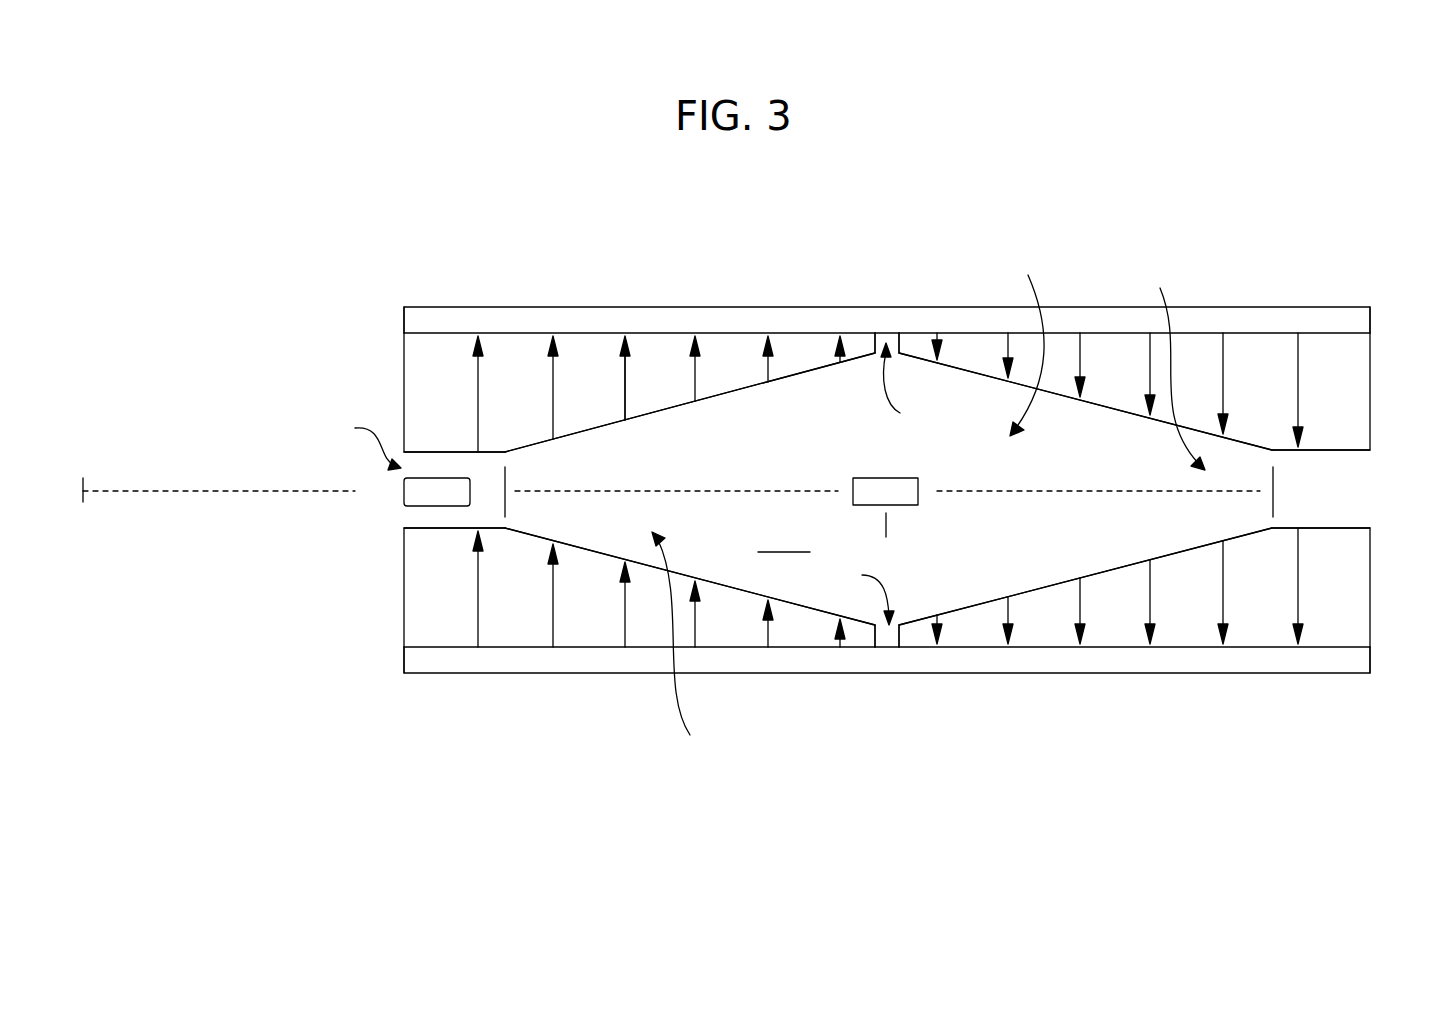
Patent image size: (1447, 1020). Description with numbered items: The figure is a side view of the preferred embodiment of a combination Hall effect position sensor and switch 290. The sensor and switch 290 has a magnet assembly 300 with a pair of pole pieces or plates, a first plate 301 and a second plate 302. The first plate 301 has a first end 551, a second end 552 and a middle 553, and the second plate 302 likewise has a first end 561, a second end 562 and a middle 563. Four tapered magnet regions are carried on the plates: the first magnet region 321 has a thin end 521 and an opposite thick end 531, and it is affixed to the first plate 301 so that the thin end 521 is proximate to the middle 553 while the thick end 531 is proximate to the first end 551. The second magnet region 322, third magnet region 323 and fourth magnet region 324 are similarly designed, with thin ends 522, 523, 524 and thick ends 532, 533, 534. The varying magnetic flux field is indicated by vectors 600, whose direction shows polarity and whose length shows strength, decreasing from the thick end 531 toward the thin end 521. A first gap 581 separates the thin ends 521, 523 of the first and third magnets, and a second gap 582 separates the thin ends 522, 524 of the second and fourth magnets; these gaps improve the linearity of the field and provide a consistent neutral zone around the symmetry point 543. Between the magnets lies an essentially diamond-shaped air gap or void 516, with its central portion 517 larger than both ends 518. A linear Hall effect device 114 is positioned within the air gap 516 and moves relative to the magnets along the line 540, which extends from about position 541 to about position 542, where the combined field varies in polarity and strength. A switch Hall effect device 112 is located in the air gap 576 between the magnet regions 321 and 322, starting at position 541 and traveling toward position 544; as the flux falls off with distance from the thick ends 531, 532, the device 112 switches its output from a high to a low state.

The combination Hall effect position sensor and switch 290 is at (385, 212).
The magnet assembly 300 is at (376, 321).
The first plate 301 is at (580, 318).
The second plate 302 is at (605, 663).
The first magnet region 321 is at (410, 390).
The second magnet region 322 is at (410, 595).
The third magnet region 323 is at (1335, 388).
The fourth magnet region 324 is at (1325, 598).
The first end of first plate 551 is at (425, 320).
The second end of first plate 552 is at (1345, 308).
The first end of second plate 561 is at (420, 677).
The second end of second plate 562 is at (1340, 663).
The thick end of first magnet 531 is at (518, 354).
The thick end of second magnet 532 is at (510, 632).
The thick end of third magnet 533 is at (1258, 350).
The thick end of fourth magnet 534 is at (1260, 632).
The thin end of first magnet 521 is at (790, 346).
The thin end of second magnet 522 is at (795, 633).
The thin end of third magnet 523 is at (968, 345).
The thin end of fourth magnet 524 is at (965, 632).
The middle of first plate 553 is at (885, 320).
The middle of second plate 563 is at (882, 658).
The vectors 600 is at (628, 372).
The central portion of air gap 517 is at (1029, 338).
The ends of air gap 518 is at (928, 507).
The first gap 581 is at (920, 385).
The second gap 582 is at (852, 591).
The air gap 576 is at (350, 441).
The position 544 is at (86, 478).
The position 541 is at (505, 500).
The line 540 is at (1145, 492).
The position 542 is at (1300, 492).
The symmetry point 543 is at (886, 530).
The air gap 516 is at (785, 536).
The switch Hall effect device 112 is at (403, 493).
The Hall effect device 114 is at (866, 478).